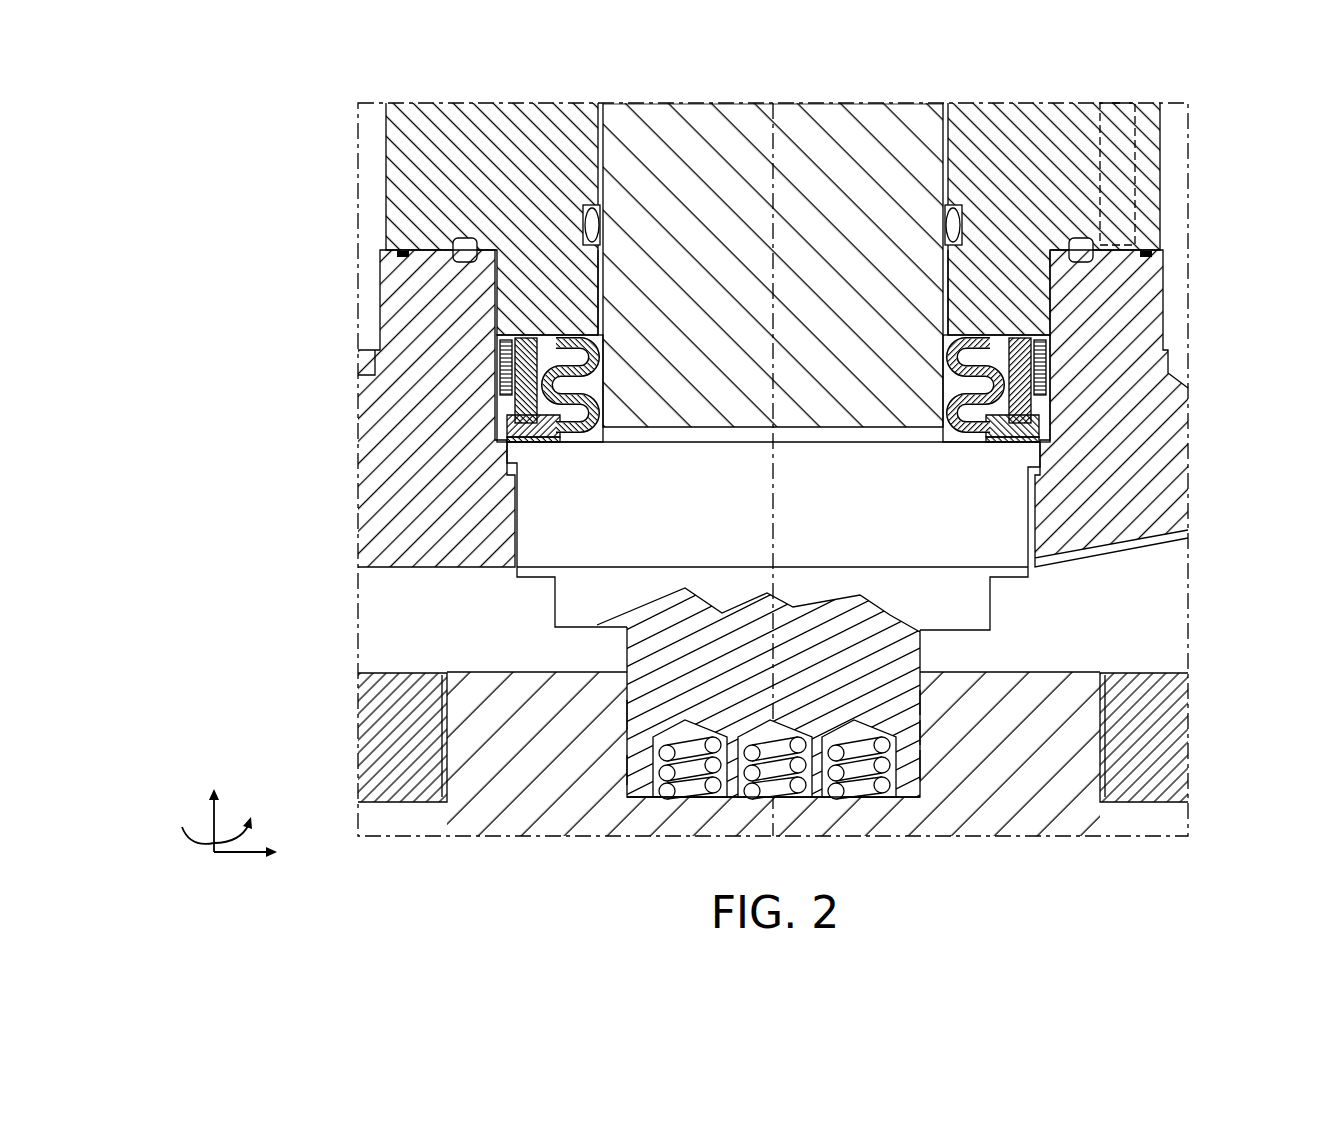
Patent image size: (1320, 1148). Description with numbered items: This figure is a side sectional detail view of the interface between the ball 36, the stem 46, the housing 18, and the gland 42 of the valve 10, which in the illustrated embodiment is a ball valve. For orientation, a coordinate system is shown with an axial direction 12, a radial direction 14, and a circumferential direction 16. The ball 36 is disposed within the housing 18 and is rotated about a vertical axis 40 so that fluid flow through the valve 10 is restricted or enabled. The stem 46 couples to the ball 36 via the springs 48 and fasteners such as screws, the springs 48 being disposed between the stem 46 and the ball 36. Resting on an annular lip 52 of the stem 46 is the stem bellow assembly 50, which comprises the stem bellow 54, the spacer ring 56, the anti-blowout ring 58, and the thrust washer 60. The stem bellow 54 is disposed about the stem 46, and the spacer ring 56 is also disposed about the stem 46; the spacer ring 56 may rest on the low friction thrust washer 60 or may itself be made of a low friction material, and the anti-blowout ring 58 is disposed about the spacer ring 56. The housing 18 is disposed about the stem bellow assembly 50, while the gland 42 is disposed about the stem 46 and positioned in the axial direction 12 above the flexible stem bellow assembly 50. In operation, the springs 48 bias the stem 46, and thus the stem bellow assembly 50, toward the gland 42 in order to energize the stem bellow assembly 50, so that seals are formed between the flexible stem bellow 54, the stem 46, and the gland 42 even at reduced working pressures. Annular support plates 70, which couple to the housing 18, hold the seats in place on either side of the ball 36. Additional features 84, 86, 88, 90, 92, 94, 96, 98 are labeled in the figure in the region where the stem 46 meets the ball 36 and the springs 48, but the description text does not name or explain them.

The valve 10 is at (253, 345).
The axial direction 12 is at (217, 820).
The radial direction 14 is at (245, 850).
The circumferential direction 16 is at (183, 828).
The housing 18 is at (378, 440).
The ball 36 is at (985, 665).
The vertical axis 40 is at (782, 172).
The gland 42 is at (447, 163).
The stem 46 is at (832, 106).
The springs 48 is at (688, 797).
The stem bellow assembly 50 is at (773, 441).
The annular lip 52 is at (570, 440).
The stem bellow 54 is at (593, 432).
The spacer ring 56 is at (537, 442).
The anti-blowout ring 58 is at (510, 395).
The thrust washer 60 is at (590, 283).
The annular support plates 70 is at (378, 707).
The first surface 84 is at (640, 765).
The second surface 86 is at (640, 793).
The piston hub 88 is at (855, 718).
The outer wall 90 is at (627, 715).
The bottom wall 92 is at (668, 790).
The inner wall 94 is at (923, 733).
The side wall 96 is at (925, 702).
The chamfer 98 is at (923, 763).